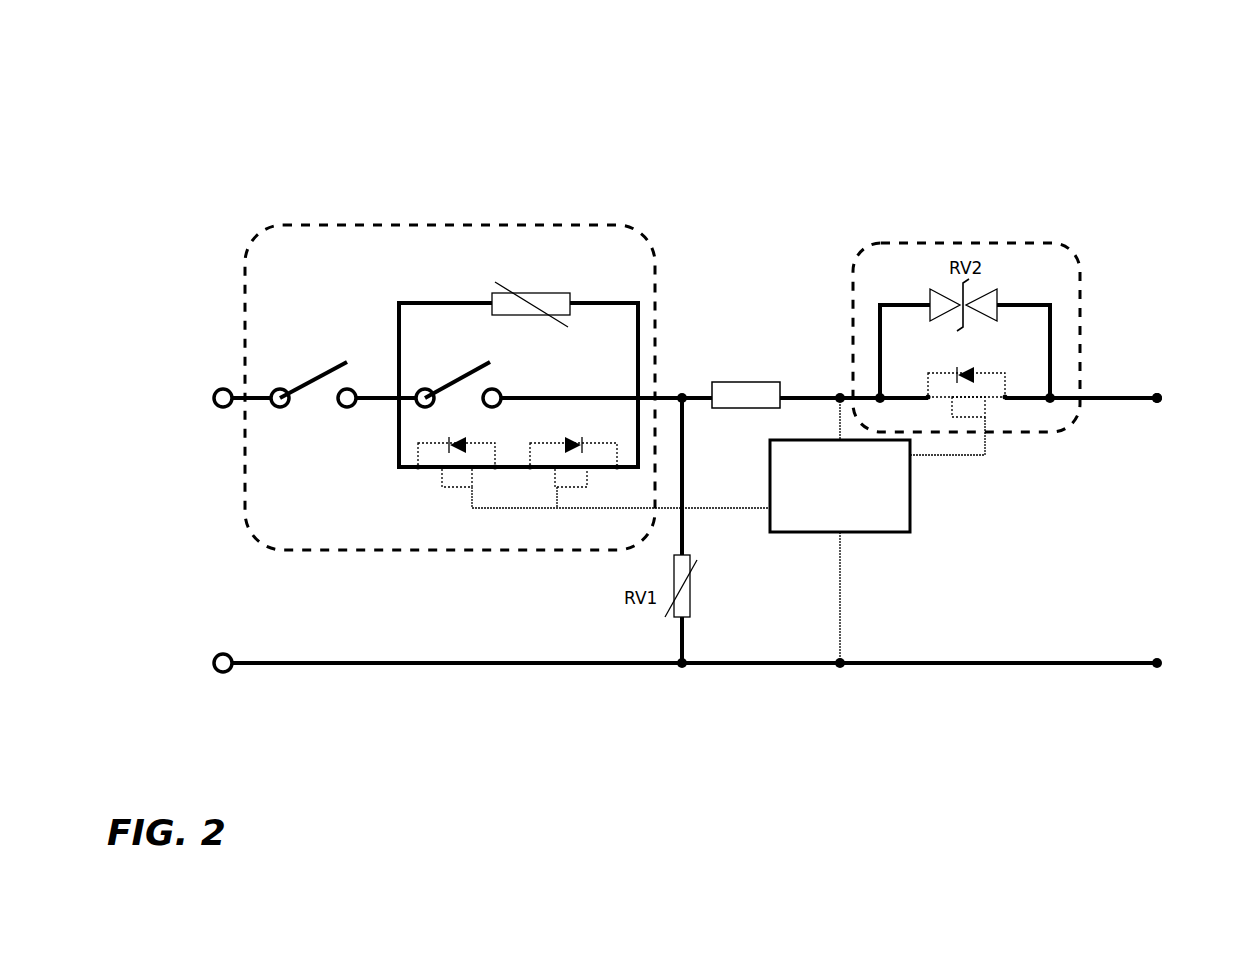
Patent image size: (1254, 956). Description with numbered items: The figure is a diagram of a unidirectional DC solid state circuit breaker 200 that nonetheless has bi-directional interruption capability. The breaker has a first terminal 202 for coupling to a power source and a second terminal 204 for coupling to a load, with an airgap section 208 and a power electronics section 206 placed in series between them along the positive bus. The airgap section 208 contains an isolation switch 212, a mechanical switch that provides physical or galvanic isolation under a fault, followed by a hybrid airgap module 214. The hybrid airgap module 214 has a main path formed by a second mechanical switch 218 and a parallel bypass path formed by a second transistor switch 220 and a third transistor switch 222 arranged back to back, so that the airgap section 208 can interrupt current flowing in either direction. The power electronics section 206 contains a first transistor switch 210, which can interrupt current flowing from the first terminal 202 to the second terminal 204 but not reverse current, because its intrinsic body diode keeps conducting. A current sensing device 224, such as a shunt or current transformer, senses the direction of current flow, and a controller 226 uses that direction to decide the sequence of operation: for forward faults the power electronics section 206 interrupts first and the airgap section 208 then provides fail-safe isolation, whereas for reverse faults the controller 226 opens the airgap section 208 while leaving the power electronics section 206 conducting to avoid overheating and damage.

The DC solid state circuit breaker 200 is at (701, 93).
The first terminal 202 is at (221, 389).
The second terminal 204 is at (1160, 394).
The power electronics section 206 is at (876, 246).
The airgap section 208 is at (293, 224).
The first transistor switch Q1 210 is at (997, 401).
The isolation switch SW1 212 is at (286, 408).
The hybrid airgap module 214 is at (437, 281).
The switch SW2 218 is at (414, 386).
The second transistor switch Q2 220 is at (482, 467).
The third transistor switch Q3 222 is at (592, 467).
The current sensing device 224 is at (718, 382).
The controller 226 is at (840, 551).